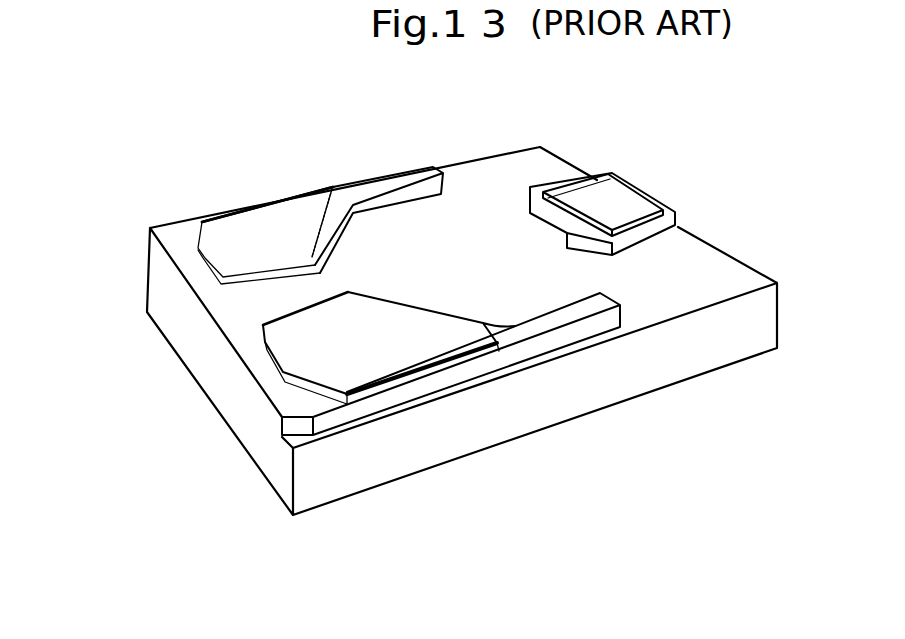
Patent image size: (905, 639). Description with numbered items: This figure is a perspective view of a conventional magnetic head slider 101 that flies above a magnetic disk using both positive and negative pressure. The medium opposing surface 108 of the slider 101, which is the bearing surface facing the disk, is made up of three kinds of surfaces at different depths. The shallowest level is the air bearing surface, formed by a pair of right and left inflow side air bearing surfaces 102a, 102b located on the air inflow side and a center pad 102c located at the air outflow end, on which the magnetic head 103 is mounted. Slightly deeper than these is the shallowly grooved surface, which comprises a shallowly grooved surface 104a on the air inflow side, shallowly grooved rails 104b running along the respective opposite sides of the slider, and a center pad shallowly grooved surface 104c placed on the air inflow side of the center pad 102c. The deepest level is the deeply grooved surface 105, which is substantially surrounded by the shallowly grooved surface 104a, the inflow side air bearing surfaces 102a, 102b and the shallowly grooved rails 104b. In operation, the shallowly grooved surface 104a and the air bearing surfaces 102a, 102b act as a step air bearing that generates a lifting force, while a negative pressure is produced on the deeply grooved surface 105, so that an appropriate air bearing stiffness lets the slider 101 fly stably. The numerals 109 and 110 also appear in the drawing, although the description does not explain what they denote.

The slider 101 is at (687, 362).
The inflow side air bearing surface 102a is at (238, 243).
The inflow side air bearing surface 102b is at (338, 338).
The center pad 102c is at (615, 200).
The magnetic head 103 is at (652, 195).
The shallowly grooved surface on the air inflow side 104a is at (225, 307).
The shallowly grooved rail 104b is at (381, 177).
The center pad shallowly grooved surface 104c is at (557, 215).
The deeply grooved surface 105 is at (457, 257).
The medium opposing surface 108 is at (279, 197).
The junction portion 109 is at (448, 358).
The side surface 110 is at (403, 413).